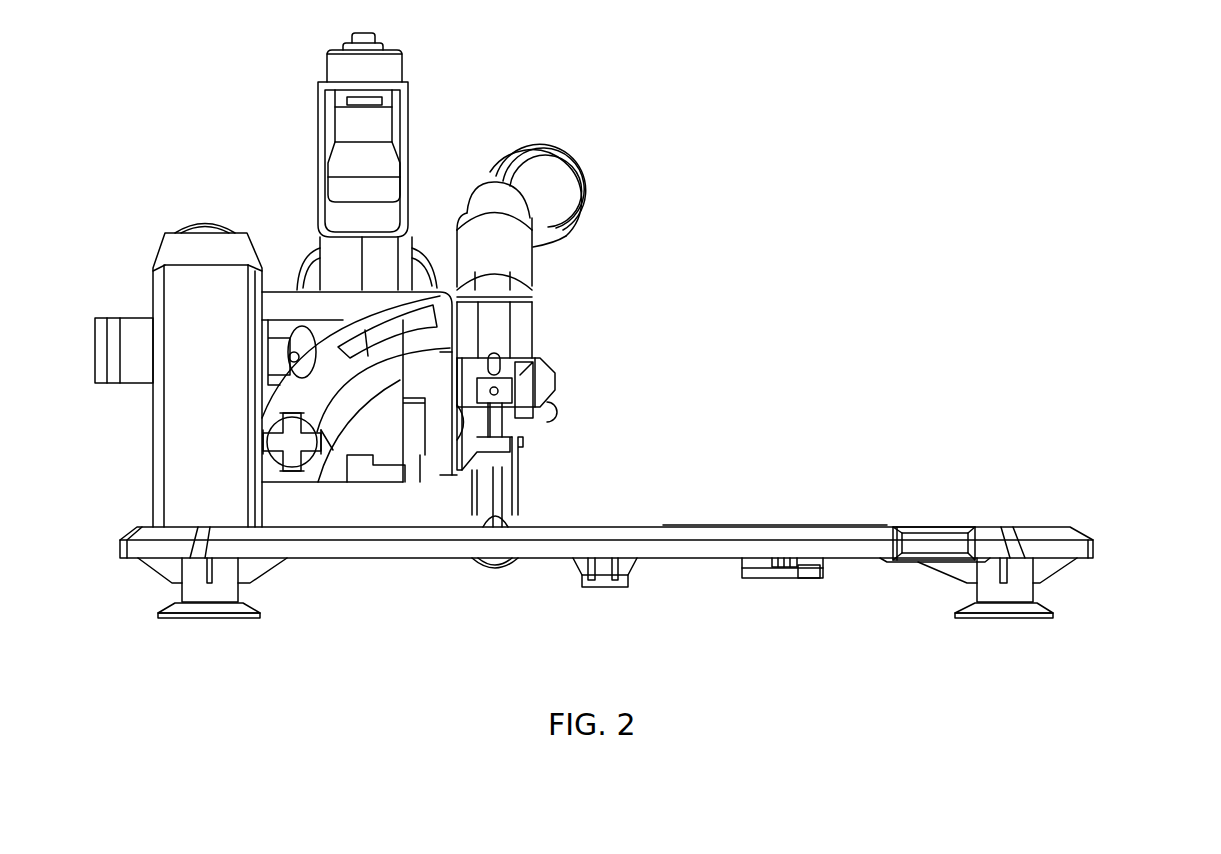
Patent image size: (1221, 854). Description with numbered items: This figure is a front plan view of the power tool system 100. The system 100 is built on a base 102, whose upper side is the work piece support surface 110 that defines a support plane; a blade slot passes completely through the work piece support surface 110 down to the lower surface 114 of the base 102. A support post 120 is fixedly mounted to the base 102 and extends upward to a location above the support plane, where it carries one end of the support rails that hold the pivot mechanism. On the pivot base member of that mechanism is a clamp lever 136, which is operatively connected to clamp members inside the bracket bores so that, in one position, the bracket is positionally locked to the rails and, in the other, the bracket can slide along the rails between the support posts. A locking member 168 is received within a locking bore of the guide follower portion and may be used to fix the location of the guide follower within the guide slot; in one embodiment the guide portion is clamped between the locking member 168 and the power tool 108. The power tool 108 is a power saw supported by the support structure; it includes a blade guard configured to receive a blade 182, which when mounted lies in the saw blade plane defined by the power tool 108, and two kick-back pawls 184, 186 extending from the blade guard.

The power tool system 100 is at (172, 109).
The power tool 108 is at (404, 124).
The clamp lever 136 is at (138, 318).
The support post 120 is at (155, 412).
The locking member 168 is at (323, 440).
The kick-back pawl 184 is at (517, 495).
The kick-back pawl 186 is at (470, 504).
The blade 182 is at (505, 510).
The work piece support surface 110 is at (798, 525).
The lower surface 114 is at (682, 560).
The base 102 is at (1093, 548).